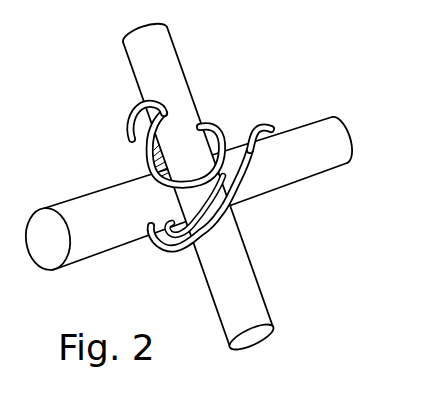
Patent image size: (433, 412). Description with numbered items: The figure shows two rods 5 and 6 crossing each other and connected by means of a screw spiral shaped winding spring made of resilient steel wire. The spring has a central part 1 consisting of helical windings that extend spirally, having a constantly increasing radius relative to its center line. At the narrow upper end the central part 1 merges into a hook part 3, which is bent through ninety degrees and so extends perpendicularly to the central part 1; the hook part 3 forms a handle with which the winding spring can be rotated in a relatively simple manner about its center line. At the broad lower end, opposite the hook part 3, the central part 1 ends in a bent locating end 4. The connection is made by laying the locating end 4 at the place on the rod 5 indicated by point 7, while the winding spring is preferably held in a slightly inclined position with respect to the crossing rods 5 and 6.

The central part 1 is at (216, 119).
The hook part 3 is at (127, 116).
The locating end 4 is at (267, 118).
The rod 5 is at (248, 290).
The rod 6 is at (78, 198).
The point 7 is at (214, 200).